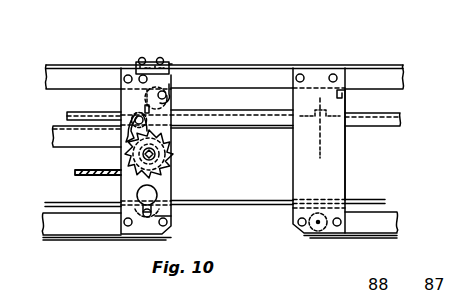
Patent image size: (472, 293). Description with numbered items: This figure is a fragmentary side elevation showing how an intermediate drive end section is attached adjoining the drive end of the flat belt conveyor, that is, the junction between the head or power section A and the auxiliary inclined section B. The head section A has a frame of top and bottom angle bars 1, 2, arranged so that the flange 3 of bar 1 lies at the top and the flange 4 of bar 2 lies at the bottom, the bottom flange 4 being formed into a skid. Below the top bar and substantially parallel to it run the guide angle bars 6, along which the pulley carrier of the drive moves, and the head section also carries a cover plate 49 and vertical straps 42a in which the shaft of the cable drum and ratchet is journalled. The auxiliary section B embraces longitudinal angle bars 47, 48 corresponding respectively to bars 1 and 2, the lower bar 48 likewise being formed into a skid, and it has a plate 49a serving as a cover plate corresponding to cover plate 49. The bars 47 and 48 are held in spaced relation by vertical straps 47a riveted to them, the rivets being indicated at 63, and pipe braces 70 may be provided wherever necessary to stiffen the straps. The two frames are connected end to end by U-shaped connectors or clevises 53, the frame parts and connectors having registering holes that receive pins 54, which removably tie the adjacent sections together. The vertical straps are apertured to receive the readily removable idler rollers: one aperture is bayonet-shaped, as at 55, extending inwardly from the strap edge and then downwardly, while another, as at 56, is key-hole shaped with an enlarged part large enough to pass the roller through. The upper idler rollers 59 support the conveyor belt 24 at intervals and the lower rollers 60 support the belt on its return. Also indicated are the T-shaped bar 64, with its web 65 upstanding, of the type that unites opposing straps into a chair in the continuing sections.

The head section A is at (45, 56).
The auxiliary head section B is at (290, 57).
The top angle bar 1 is at (82, 76).
The bottom angle bar 2 is at (50, 222).
The flange 3 is at (108, 64).
The flange 4 is at (65, 241).
The guide angle bar 6 is at (64, 135).
The conveyor belt 24 is at (248, 201).
The vertical strap 42a is at (165, 183).
The longitudinal angle bar 47 is at (390, 73).
The vertical strap 47a is at (347, 151).
The longitudinal angle bar 48 is at (394, 222).
The cover plate 49 is at (70, 117).
The cover plate 49a is at (398, 118).
The U-shaped connector 53 is at (172, 63).
The pin 54 is at (160, 58).
The bayonet-shaped aperture 55 is at (344, 92).
The key-hole aperture 56 is at (137, 195).
The upper idler roller 59 is at (172, 97).
The lower idler roller 60 is at (173, 216).
The rivet 63 is at (128, 75).
The T-shaped bar 64 is at (325, 163).
The web 65 is at (321, 98).
The pipe brace 70 is at (323, 230).